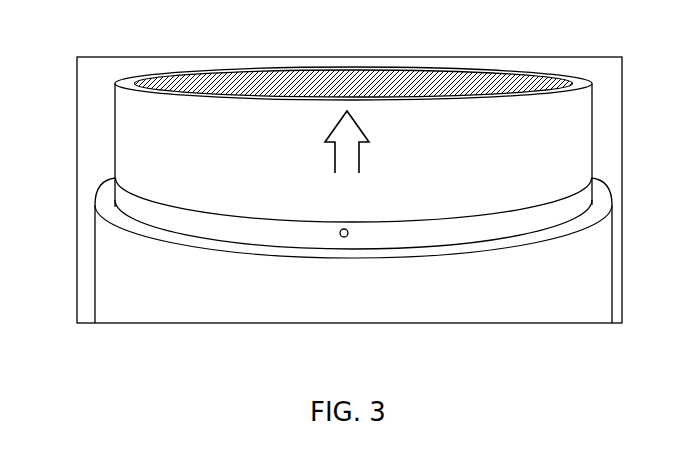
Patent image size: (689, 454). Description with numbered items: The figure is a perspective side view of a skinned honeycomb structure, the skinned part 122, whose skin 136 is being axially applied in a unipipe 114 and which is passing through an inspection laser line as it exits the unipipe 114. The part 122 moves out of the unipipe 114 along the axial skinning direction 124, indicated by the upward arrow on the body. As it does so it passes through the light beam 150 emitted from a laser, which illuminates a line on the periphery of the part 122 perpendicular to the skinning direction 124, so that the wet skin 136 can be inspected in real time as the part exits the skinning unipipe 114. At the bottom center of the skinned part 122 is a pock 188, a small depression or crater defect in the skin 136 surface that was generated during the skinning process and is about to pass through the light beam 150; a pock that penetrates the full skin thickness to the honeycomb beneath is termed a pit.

The unipipe 114 is at (117, 274).
The skinned part 122 is at (228, 77).
The axial skinning direction 124 is at (350, 162).
The skin 136 is at (582, 125).
The light beam 150 is at (130, 193).
The pock 188 is at (340, 237).